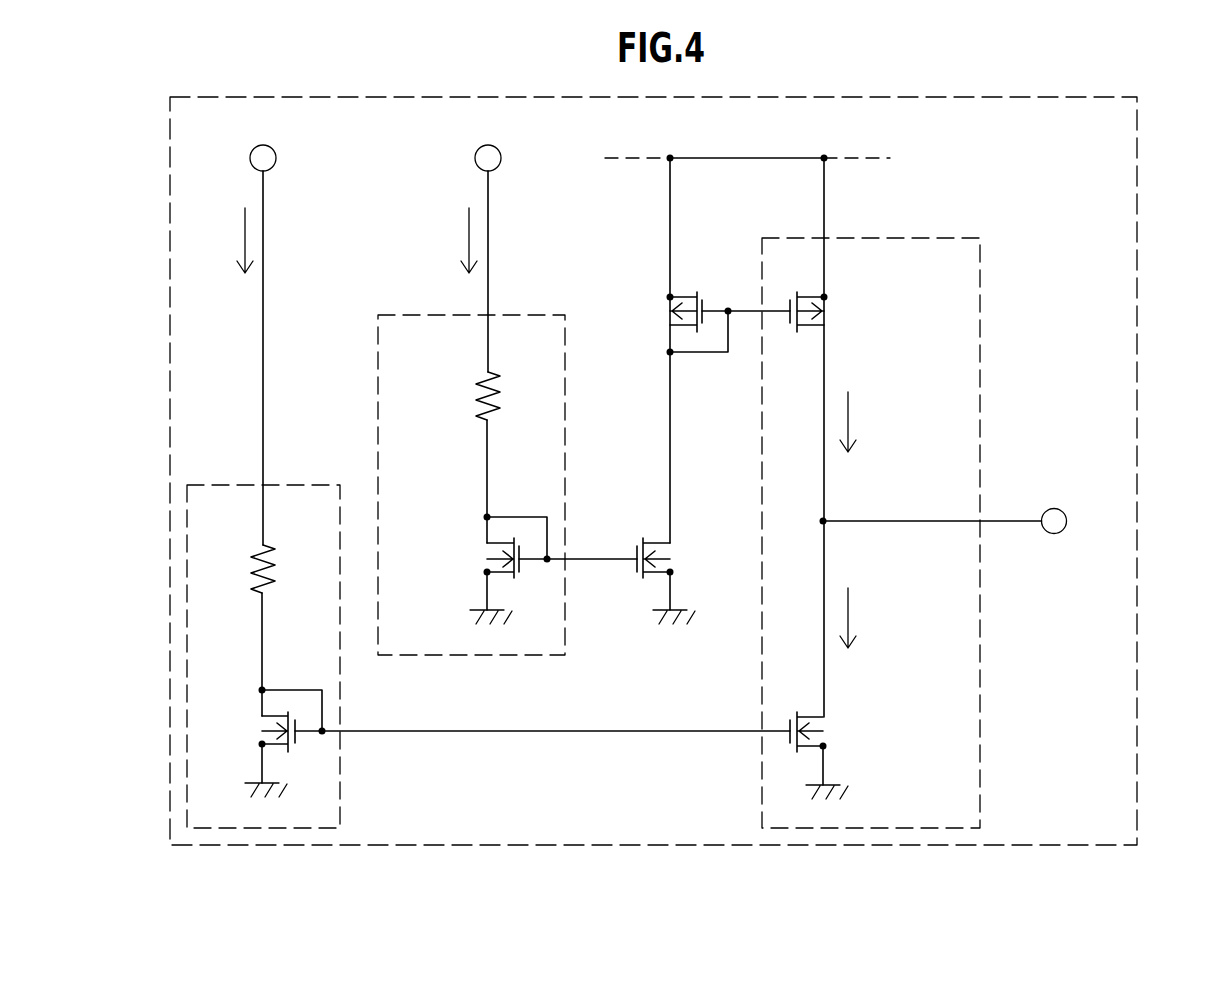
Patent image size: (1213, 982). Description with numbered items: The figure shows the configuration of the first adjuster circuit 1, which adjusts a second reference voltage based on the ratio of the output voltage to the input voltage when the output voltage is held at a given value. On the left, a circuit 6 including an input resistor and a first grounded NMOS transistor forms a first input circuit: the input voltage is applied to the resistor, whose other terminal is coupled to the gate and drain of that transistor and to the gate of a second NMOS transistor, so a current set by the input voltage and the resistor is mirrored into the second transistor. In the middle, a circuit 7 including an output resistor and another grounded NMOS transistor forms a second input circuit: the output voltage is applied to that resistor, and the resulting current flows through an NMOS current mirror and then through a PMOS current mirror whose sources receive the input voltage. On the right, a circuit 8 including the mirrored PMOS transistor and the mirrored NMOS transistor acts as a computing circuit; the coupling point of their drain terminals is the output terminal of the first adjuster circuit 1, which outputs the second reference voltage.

The first adjuster circuit 1 is at (1137, 637).
The circuit including the resistor RIN and the NMOS transistor M4 6 is at (340, 780).
The circuit including the resistor ROUT and the NMOS transistor M6 7 is at (378, 343).
The circuit including the PMOS transistor M7 and the NMOS transistor M10 8 is at (980, 687).